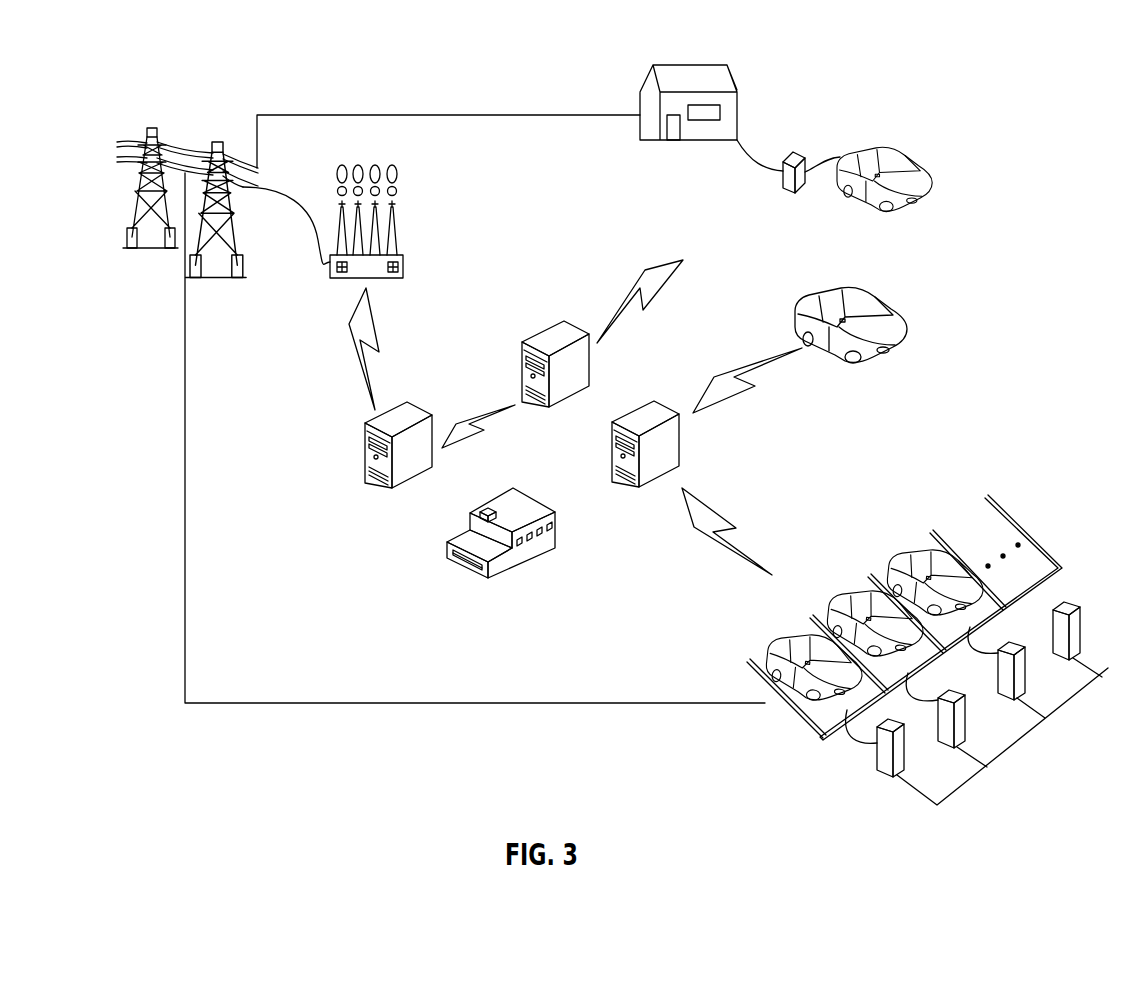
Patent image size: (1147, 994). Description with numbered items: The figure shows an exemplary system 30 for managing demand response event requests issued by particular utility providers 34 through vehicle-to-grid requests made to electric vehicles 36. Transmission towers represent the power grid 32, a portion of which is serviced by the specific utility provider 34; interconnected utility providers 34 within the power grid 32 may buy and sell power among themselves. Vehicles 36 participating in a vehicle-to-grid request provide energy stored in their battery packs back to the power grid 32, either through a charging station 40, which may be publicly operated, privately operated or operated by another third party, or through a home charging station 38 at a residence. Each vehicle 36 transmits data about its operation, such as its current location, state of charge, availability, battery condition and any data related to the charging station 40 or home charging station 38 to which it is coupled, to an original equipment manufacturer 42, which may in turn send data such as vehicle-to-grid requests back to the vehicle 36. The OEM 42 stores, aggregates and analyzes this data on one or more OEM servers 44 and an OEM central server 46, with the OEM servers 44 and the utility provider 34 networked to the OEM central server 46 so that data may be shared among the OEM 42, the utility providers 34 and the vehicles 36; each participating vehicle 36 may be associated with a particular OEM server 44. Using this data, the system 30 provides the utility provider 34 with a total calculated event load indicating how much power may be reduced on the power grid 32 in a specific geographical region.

The system 30 is at (920, 71).
The power grid 32 is at (179, 107).
The utility provider 34 is at (397, 237).
The electric vehicle 36 is at (868, 157).
The home charging station 38 is at (772, 185).
The charging station 40 is at (1082, 566).
The original equipment manufacturer (OEM) 42 is at (540, 543).
The OEM server 44 is at (577, 362).
The OEM central server 46 is at (370, 463).